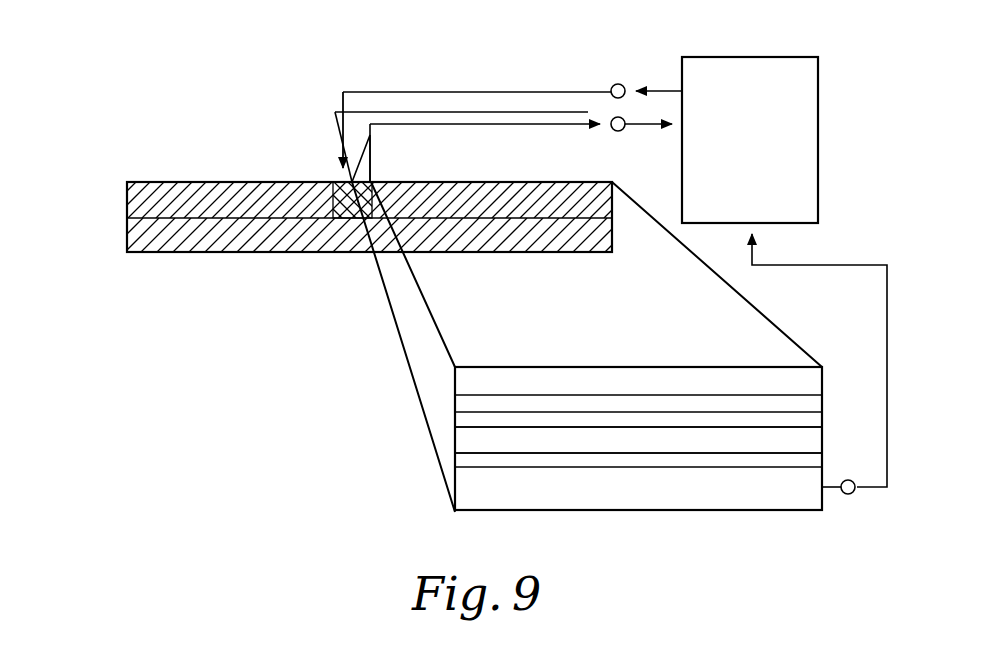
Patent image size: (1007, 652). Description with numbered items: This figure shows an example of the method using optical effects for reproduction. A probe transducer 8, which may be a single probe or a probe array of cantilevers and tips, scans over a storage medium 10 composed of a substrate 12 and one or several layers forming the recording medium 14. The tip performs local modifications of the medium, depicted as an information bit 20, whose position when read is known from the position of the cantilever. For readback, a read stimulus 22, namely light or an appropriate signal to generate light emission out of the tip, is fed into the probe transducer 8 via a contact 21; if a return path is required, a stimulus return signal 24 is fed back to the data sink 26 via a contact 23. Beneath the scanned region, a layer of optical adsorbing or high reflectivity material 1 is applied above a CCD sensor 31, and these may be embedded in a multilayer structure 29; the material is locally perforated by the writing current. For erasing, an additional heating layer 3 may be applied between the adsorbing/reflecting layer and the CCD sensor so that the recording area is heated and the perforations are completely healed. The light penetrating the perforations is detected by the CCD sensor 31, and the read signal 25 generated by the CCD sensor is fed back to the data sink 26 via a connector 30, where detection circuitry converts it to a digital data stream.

The optical adsorbing or high reflectivity material 1 is at (793, 381).
The heating layer 3 is at (793, 440).
The probe transducer 8 is at (352, 124).
The storage medium 10 is at (118, 183).
The substrate 12 is at (502, 248).
The recording medium 14 is at (503, 192).
The information bit 20 is at (340, 192).
The contact 21 is at (612, 85).
The read stimulus 22 is at (622, 84).
The contact 23 is at (612, 130).
The stimulus return signal 24 is at (622, 131).
The read signal 25 is at (814, 266).
The data sink 26 is at (786, 66).
The multilayer structure 29 is at (441, 372).
The connector 30 is at (850, 495).
The CCD sensor 31 is at (688, 497).